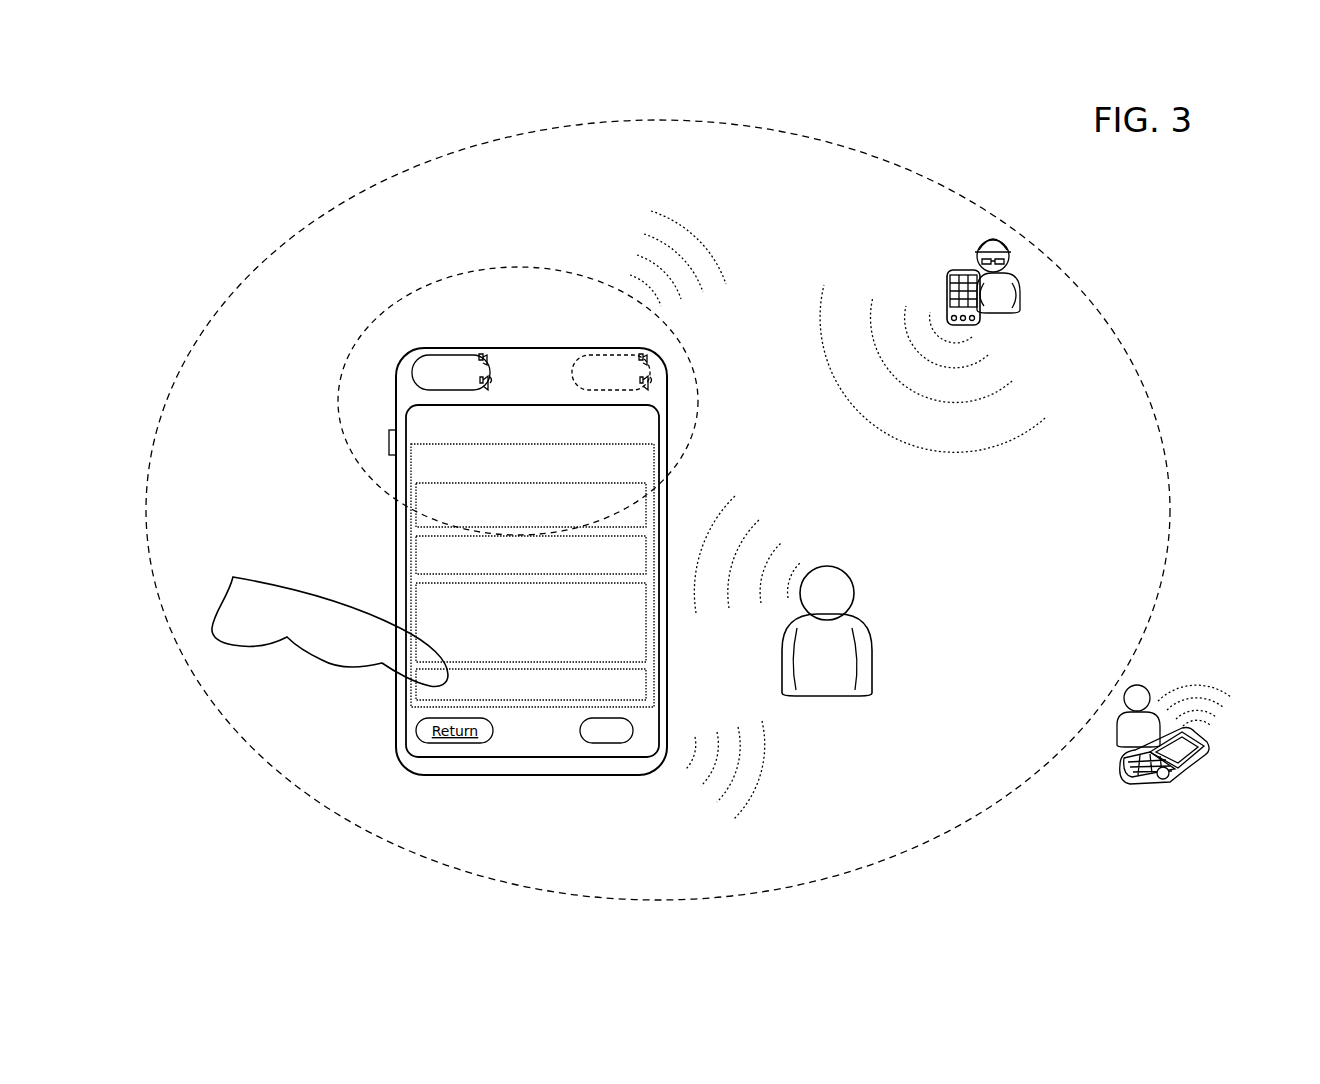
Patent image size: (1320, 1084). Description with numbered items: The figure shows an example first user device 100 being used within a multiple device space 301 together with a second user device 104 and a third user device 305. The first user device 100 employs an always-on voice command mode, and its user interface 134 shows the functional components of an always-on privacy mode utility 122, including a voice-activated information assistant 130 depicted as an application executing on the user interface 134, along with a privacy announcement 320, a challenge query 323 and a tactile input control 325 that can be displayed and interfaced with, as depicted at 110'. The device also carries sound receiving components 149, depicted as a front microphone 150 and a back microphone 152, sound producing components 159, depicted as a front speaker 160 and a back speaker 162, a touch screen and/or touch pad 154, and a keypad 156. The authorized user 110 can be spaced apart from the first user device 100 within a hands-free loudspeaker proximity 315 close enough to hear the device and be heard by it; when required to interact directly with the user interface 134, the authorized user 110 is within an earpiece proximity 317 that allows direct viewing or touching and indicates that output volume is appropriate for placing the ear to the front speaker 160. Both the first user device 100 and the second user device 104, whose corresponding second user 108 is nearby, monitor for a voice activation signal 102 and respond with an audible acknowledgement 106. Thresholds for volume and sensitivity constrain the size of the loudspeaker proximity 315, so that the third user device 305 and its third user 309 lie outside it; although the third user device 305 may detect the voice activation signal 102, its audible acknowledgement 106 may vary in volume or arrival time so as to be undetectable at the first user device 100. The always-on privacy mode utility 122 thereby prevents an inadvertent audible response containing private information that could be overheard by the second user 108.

The first user device 100 is at (533, 776).
The voice activation signal 102 is at (725, 252).
The second user device 104 is at (978, 322).
The audible acknowledgement 106 is at (770, 520).
The second user 108 is at (1020, 285).
The authorized user 110 is at (861, 631).
The interfacing with the user interface 110' is at (330, 639).
The always-on privacy mode utility 122 is at (532, 575).
The voice-activated information assistant 130 is at (531, 622).
The user interface 134 is at (533, 421).
The sound receiving components 149 is at (410, 390).
The front microphone 150 is at (490, 380).
The back microphone 152 is at (652, 380).
The touch screen and/or touch pad 154 is at (410, 577).
The keypad 156 is at (645, 720).
The sound producing components 159 is at (487, 350).
The front speaker 160 is at (487, 368).
The back speaker 162 is at (642, 360).
The multiple device space 301 is at (658, 510).
The third user device 305 is at (1168, 780).
The third user 309 is at (1117, 725).
The loudspeaker proximity 315 is at (674, 157).
The earpiece proximity 317 is at (518, 401).
The privacy announcement 320 is at (531, 505).
The challenge query 323 is at (531, 555).
The tactile input control 325 is at (531, 684).